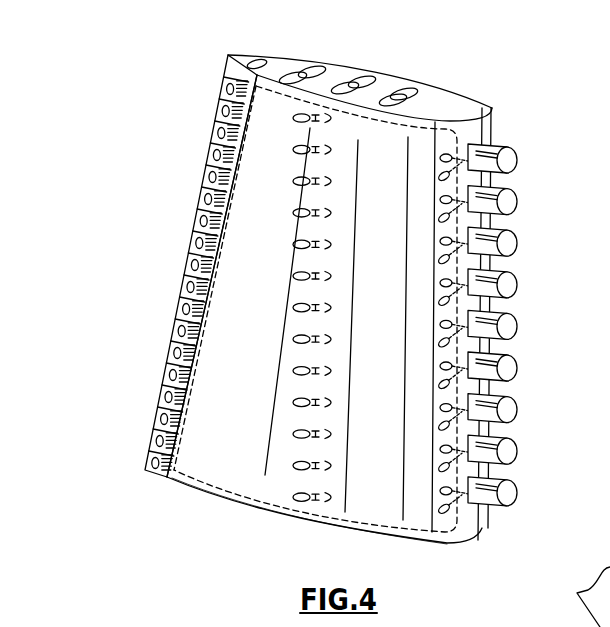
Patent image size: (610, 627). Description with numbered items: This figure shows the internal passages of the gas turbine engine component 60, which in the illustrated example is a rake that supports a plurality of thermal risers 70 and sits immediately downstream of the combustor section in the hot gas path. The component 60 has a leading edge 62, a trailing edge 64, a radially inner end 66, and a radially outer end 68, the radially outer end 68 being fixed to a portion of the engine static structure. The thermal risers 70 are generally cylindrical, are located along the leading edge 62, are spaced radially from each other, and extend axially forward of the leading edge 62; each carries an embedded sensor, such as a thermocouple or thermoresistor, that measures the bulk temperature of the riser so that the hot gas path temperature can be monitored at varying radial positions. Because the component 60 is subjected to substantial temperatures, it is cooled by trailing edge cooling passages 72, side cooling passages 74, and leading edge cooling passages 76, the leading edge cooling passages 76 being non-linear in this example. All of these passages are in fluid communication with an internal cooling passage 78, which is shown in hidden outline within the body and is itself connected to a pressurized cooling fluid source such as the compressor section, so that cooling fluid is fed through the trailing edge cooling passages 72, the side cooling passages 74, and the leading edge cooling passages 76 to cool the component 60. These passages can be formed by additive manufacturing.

The gas turbine engine component 60 is at (531, 75).
The leading edge 62 is at (492, 110).
The trailing edge 64 is at (182, 297).
The radially inner end 66 is at (445, 97).
The radially outer end 68 is at (413, 541).
The thermal risers 70 is at (516, 158).
The trailing edge cooling passages 72 is at (154, 397).
The side cooling passages 74 is at (303, 497).
The leading edge cooling passages 76 is at (443, 511).
The internal cooling passage 78 is at (243, 493).